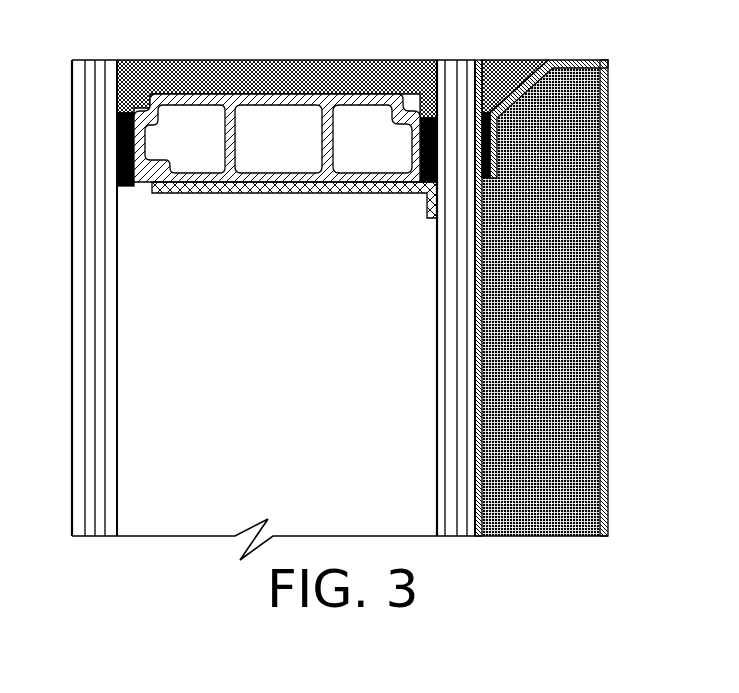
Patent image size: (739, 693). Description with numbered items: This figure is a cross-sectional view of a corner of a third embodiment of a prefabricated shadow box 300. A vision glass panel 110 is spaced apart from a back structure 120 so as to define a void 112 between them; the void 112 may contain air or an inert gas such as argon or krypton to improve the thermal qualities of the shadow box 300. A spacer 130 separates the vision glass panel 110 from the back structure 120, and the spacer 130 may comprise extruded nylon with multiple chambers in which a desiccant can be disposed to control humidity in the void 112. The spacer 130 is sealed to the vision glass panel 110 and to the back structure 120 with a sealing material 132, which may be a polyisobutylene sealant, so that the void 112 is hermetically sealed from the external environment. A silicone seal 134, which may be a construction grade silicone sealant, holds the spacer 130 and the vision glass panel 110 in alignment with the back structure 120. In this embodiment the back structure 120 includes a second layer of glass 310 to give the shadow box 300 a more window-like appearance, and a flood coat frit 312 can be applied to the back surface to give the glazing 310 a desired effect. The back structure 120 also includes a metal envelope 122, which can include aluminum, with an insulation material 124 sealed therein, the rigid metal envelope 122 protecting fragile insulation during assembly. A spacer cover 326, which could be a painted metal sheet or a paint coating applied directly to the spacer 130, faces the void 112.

The shadow box 300 is at (51, 46).
The vision glass panel 110 is at (77, 415).
The void 112 is at (288, 370).
The back structure 120 is at (560, 279).
The metal envelope 122 is at (605, 272).
The insulation material 124 is at (560, 358).
The spacer 130 is at (233, 93).
The sealing material 132 is at (127, 186).
The silicone seal 134 is at (329, 63).
The second layer of glass 310 is at (443, 345).
The flood coat frit 312 is at (474, 410).
The spacer cover 326 is at (313, 194).